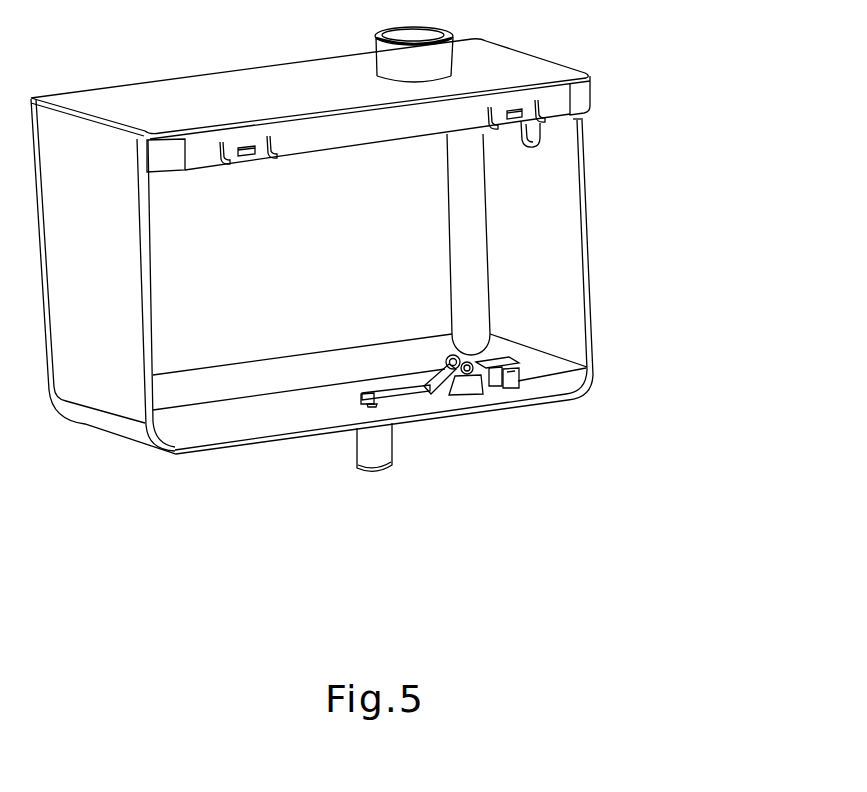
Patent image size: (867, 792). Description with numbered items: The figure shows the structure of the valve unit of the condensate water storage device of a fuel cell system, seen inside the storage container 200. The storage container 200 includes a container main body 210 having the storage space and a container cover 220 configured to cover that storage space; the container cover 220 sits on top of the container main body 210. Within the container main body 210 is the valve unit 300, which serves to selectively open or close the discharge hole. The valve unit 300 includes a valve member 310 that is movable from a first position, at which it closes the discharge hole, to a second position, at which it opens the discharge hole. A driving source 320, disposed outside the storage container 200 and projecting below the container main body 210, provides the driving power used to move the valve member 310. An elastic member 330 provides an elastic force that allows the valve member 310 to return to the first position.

The storage container 200 is at (385, 240).
The container main body 210 is at (683, 83).
The container cover 220 is at (553, 73).
The valve unit 300 is at (508, 408).
The valve member 310 is at (437, 391).
The driving source 320 is at (373, 454).
The elastic member 330 is at (527, 373).